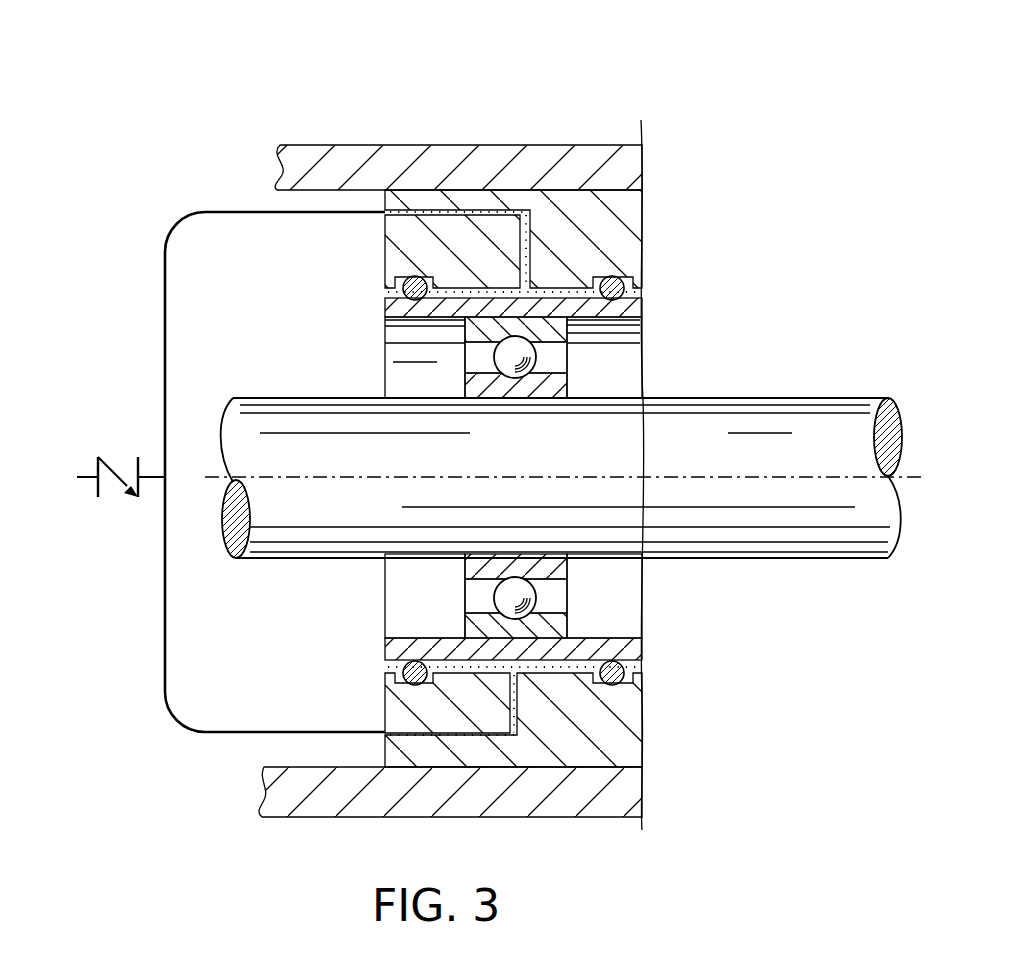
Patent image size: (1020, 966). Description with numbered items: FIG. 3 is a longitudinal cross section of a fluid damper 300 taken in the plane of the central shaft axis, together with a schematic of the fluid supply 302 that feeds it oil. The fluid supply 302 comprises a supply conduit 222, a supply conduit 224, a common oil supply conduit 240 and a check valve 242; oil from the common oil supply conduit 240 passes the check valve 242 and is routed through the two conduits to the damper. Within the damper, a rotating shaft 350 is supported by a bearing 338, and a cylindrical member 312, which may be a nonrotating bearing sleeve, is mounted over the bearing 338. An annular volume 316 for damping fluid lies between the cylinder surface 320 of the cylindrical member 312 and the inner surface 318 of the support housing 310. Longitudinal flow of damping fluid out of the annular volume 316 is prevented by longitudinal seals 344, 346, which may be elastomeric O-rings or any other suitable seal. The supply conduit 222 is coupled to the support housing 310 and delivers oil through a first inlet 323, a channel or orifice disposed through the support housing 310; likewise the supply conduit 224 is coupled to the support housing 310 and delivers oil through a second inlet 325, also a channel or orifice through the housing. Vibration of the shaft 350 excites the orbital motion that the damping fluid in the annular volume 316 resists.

The fluid damper 300 is at (457, 84).
The fluid supply 302 is at (139, 147).
The supply conduit 222 is at (230, 211).
The supply conduit 224 is at (285, 731).
The common oil supply conduit 240 is at (93, 474).
The check valve 242 is at (122, 448).
The support housing 310 is at (646, 717).
The cylindrical member 312 is at (388, 308).
The annular volume 316 is at (464, 292).
The inner surface 318 is at (487, 668).
The cylinder surface 320 is at (450, 665).
The first inlet 323 is at (528, 240).
The second inlet 325 is at (520, 729).
The bearing 338 is at (528, 350).
The longitudinal seal 344 is at (406, 671).
The longitudinal seal 346 is at (621, 672).
The rotating shaft 350 is at (277, 398).